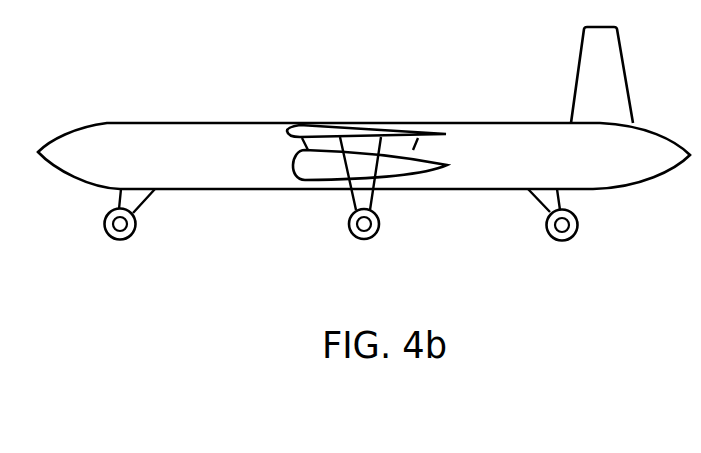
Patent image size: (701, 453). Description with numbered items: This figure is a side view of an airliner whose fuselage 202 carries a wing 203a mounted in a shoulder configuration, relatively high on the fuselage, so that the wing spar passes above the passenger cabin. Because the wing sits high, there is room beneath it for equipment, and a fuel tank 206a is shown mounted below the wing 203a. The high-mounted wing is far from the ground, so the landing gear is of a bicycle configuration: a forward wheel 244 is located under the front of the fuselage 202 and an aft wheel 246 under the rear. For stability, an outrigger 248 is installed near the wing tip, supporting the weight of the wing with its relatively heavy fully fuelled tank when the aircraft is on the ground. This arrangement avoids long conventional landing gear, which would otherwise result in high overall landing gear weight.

The fuselage 202 is at (212, 123).
The wing 203a is at (367, 128).
The fuel tank 206a is at (320, 168).
The forward wheel 244 is at (118, 240).
The outrigger 248 is at (363, 240).
The aft wheel 246 is at (560, 241).